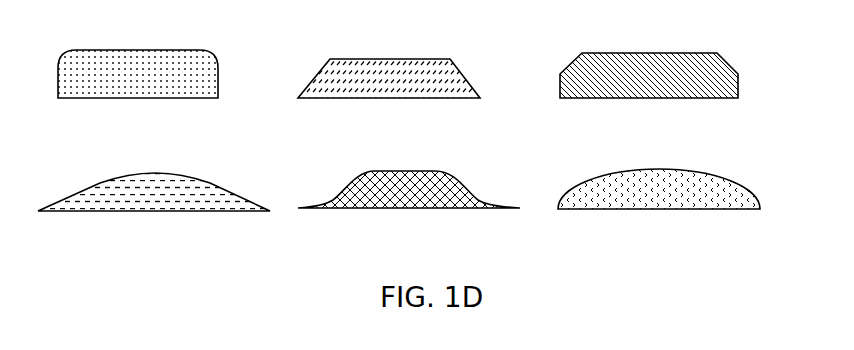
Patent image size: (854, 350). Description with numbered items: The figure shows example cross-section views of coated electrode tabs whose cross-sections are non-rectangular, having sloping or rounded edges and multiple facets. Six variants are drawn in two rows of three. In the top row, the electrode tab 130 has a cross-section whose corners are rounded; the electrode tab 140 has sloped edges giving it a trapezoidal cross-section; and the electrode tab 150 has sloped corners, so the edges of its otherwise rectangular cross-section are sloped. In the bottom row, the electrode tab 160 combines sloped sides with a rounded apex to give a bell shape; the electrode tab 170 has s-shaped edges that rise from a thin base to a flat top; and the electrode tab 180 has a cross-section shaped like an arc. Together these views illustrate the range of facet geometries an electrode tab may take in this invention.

The electrode tab 130 is at (136, 42).
The electrode tab 140 is at (382, 46).
The electrode tab 150 is at (638, 38).
The electrode tab 160 is at (168, 149).
The electrode tab 170 is at (405, 151).
The electrode tab 180 is at (652, 153).